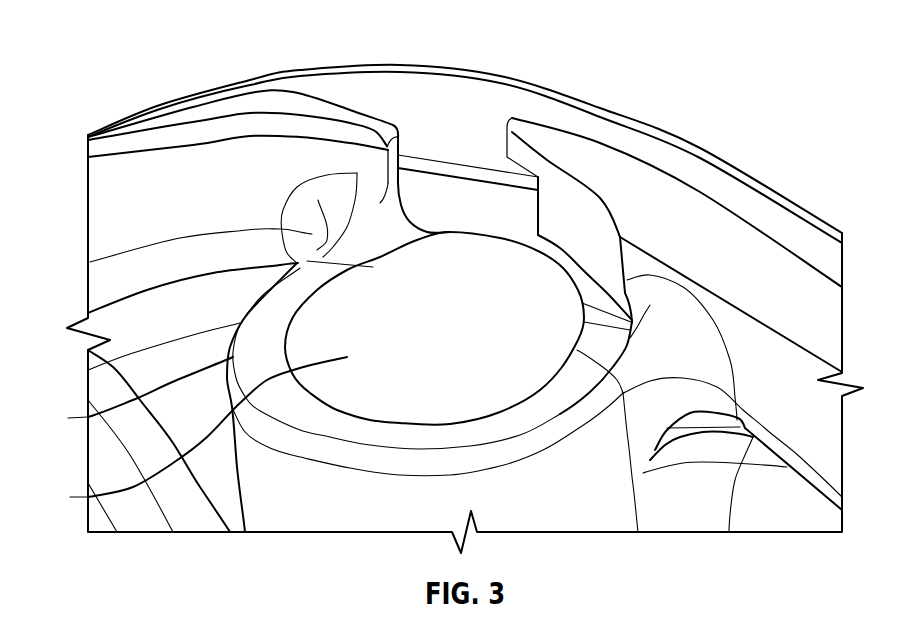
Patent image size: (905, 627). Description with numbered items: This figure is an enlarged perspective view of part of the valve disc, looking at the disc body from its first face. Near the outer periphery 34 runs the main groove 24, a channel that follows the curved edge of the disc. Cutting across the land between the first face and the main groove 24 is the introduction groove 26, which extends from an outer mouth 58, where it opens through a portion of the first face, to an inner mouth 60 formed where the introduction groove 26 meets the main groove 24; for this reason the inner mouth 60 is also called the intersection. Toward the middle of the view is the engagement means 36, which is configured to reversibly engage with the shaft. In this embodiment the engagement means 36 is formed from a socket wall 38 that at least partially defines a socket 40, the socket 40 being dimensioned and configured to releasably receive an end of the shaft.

The main groove 24 is at (708, 184).
The introduction groove 26 is at (485, 150).
The outer periphery 34 is at (780, 268).
The engagement means 36 is at (213, 343).
The socket wall 38 is at (135, 397).
The socket 40 is at (192, 437).
The outer mouth 58 is at (483, 220).
The inner mouth 60 is at (384, 108).